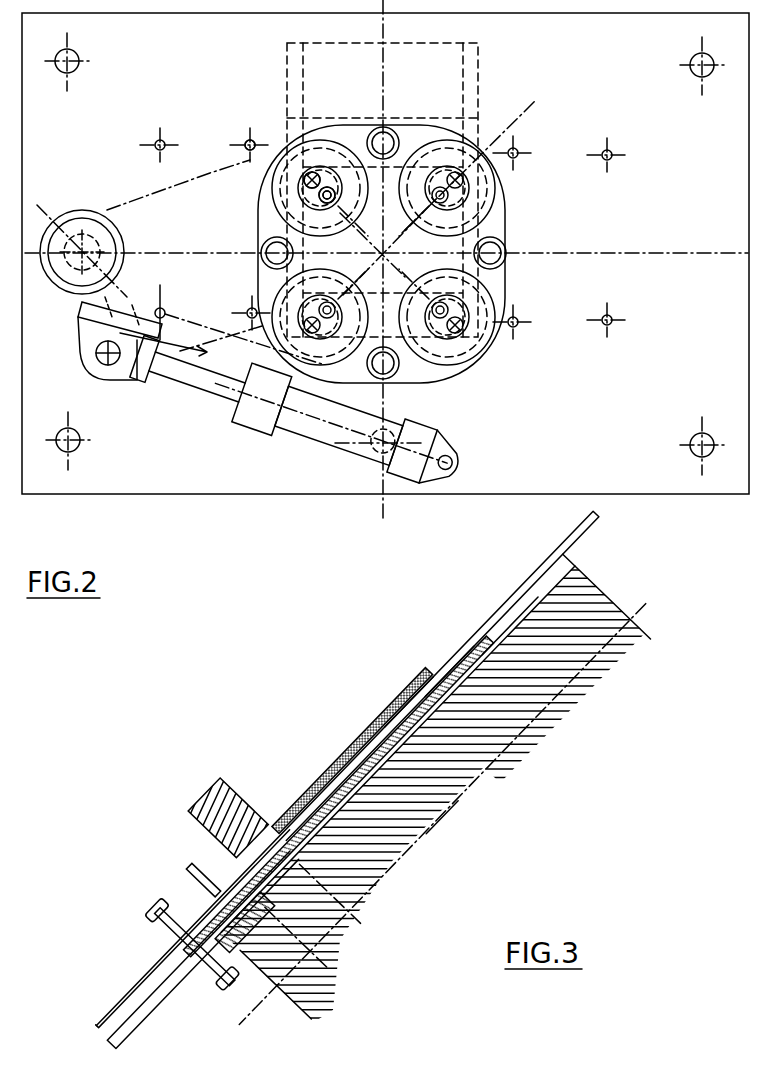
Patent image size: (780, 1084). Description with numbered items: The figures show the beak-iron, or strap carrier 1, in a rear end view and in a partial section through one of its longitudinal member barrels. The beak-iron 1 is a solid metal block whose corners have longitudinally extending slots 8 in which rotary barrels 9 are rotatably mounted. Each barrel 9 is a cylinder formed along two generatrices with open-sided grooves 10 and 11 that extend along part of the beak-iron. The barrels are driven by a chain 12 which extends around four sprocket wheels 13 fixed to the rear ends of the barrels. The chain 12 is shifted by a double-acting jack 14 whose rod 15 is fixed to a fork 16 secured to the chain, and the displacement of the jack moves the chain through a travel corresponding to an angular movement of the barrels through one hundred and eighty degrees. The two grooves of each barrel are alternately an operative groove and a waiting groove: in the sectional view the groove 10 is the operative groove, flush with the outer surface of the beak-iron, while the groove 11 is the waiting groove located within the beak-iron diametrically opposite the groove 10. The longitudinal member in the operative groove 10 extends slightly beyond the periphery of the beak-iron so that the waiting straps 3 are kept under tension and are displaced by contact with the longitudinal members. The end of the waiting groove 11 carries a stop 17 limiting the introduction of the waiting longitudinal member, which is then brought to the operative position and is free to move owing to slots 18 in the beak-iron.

In FIG. 2, the beak-iron 1 is at (266, 264).
In FIG. 3, the beak-iron 1 is at (393, 827).
In FIG. 3, the straps 3 is at (397, 703).
In FIG. 3, the slots 8 is at (390, 770).
In FIG. 2, the rotary barrels 9 is at (317, 198).
In FIG. 3, the rotary barrels 9 is at (447, 707).
In FIG. 2, the operative groove 10 is at (304, 180).
In FIG. 3, the operative groove 10 is at (458, 650).
In FIG. 2, the waiting groove 11 is at (336, 200).
In FIG. 3, the waiting groove 11 is at (500, 687).
In FIG. 2, the chain 12 is at (210, 175).
In FIG. 2, the sprocket wheels 13 is at (340, 145).
In FIG. 3, the sprocket wheels 13 is at (204, 970).
In FIG. 2, the double-acting jack 14 is at (262, 412).
In FIG. 2, the rod 15 is at (196, 384).
In FIG. 2, the fork 16 is at (98, 327).
In FIG. 3, the stop 17 is at (490, 653).
In FIG. 3, the slots 18 is at (500, 607).